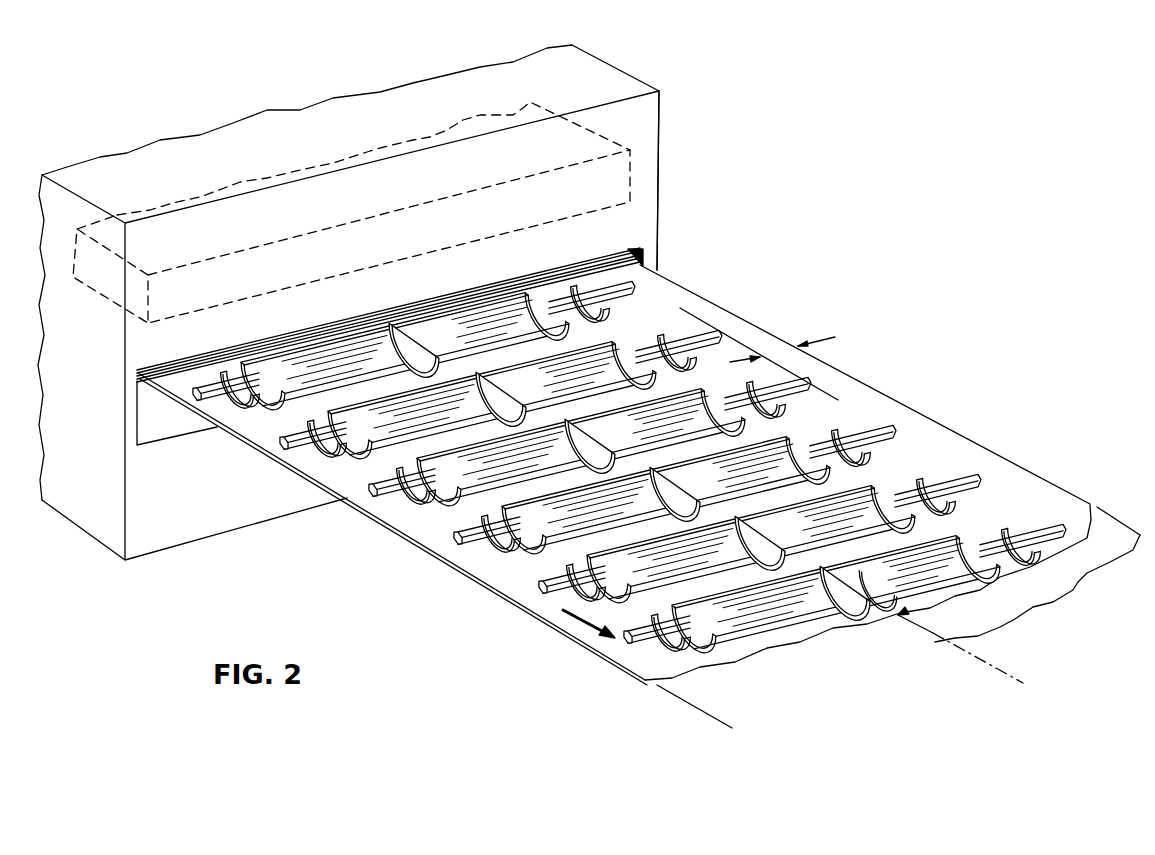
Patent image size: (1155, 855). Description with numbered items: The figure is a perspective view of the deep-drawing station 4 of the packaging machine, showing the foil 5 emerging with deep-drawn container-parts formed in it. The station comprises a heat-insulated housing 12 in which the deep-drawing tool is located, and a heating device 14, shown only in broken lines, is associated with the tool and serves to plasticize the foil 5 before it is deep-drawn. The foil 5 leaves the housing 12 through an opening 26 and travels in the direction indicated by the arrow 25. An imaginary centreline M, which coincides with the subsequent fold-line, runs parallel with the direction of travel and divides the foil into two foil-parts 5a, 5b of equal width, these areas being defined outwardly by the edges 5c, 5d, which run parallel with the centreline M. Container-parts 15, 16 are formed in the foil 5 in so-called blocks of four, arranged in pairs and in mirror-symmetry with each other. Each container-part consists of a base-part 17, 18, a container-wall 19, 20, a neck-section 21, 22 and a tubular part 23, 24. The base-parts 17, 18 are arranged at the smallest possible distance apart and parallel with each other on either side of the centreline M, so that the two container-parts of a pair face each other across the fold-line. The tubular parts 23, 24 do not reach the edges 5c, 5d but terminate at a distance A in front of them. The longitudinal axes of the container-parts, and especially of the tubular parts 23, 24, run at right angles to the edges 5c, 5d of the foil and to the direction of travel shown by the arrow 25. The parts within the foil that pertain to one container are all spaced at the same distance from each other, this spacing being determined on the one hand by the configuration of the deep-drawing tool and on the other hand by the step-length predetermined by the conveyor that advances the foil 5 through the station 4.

The holder block 4 is at (682, 152).
The foil 5 is at (638, 488).
The foil-part 5a is at (720, 712).
The foil-part 5b is at (1037, 574).
The edge 5c is at (495, 597).
The edge 5d is at (887, 392).
The heat-insulated housing 12 is at (647, 193).
The heating device 14 is at (617, 140).
The container-part 15 is at (763, 610).
The container-part 16 is at (995, 528).
The base-part 17 is at (822, 612).
The base-part 18 is at (877, 593).
The container-wall 19 is at (740, 637).
The container-wall 20 is at (940, 587).
The neck-section 21 is at (668, 648).
The neck-section 22 is at (1003, 540).
The tubular part 23 is at (458, 522).
The tubular part 24 is at (950, 473).
The arrow 25 is at (573, 627).
The opening 26 is at (172, 442).
The distance A is at (775, 353).
The centreline M is at (1007, 668).